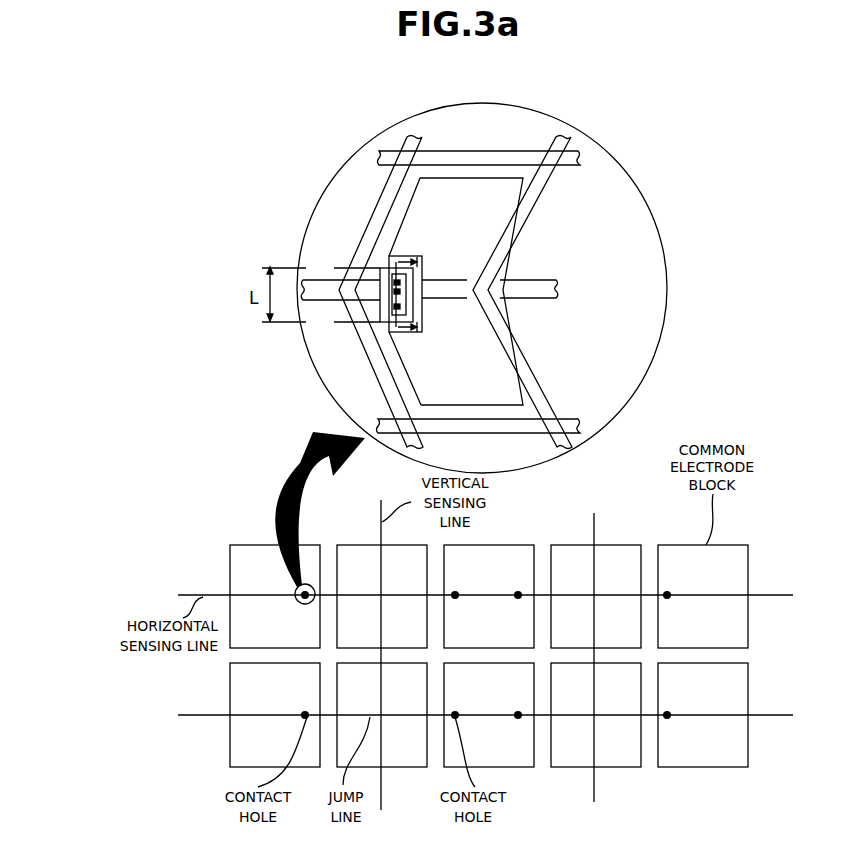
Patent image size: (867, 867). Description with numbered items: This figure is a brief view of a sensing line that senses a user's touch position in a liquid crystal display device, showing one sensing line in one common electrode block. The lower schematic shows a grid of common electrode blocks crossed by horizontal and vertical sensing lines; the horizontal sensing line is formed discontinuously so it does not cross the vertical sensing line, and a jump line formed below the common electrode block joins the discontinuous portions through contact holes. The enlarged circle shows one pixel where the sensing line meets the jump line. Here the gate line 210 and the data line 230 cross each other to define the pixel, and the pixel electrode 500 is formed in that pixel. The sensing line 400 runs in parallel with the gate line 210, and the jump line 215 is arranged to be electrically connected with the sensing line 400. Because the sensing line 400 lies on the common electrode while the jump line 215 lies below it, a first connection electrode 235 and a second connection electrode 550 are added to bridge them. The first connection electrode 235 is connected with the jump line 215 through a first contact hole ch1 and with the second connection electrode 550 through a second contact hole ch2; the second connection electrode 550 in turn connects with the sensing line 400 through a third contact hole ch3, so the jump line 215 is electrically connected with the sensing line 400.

The gate line 210 is at (518, 153).
The data line 230 is at (537, 200).
The jump line 215 is at (550, 292).
The sensing line 400 is at (327, 283).
The pixel electrode 500 is at (462, 178).
The second connection electrode 550 is at (389, 256).
The first connection electrode 235 is at (384, 305).
The first contact hole ch1 is at (392, 280).
The second contact hole ch2 is at (395, 310).
The third contact hole ch3 is at (401, 290).